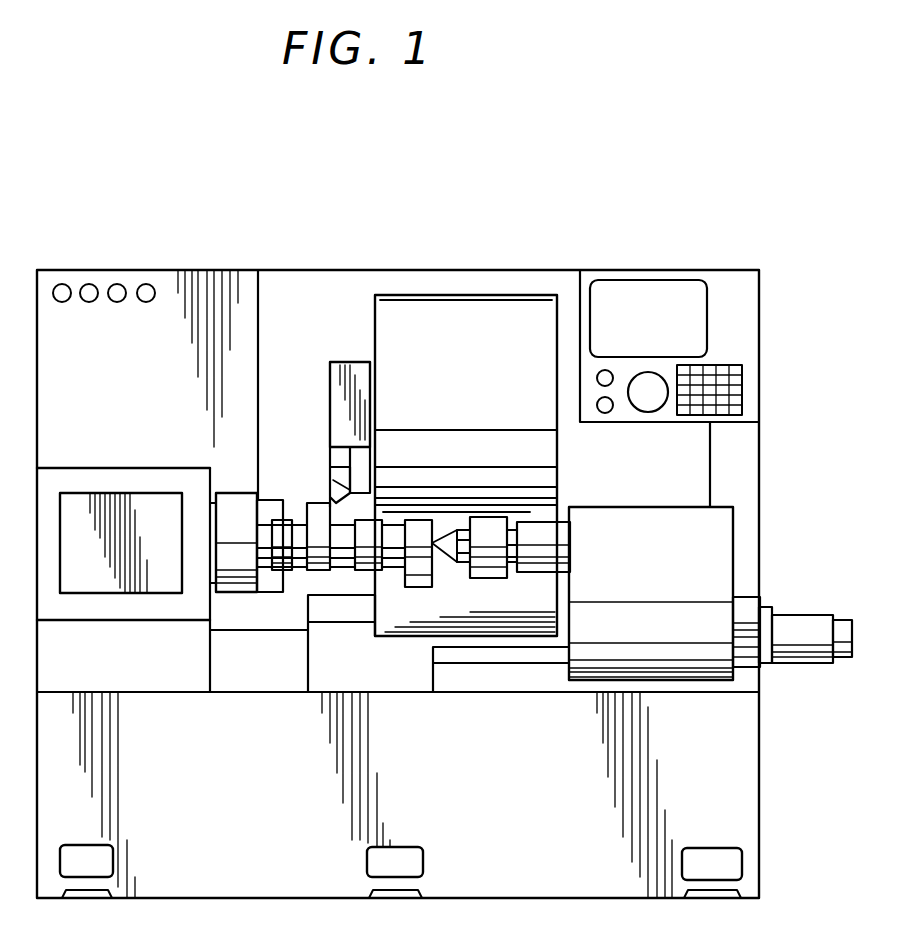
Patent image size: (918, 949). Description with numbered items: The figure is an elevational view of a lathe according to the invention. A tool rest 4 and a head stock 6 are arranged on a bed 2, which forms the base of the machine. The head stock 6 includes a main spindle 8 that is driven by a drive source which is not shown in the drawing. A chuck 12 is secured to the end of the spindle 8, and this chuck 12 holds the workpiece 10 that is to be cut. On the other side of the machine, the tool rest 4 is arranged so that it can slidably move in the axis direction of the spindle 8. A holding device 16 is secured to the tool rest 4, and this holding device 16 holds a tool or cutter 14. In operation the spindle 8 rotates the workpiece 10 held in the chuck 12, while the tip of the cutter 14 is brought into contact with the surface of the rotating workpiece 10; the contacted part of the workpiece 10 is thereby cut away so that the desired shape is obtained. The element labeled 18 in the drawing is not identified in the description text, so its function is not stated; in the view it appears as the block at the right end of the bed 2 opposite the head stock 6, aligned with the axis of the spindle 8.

The bed 2 is at (738, 831).
The tool rest 4 is at (442, 314).
The head stock 6 is at (150, 513).
The main spindle 8 is at (214, 562).
The workpiece 10 is at (320, 567).
The chuck 12 is at (238, 578).
The cutter 14 is at (341, 475).
The holding device 16 is at (362, 372).
The tailstock 18 is at (710, 593).